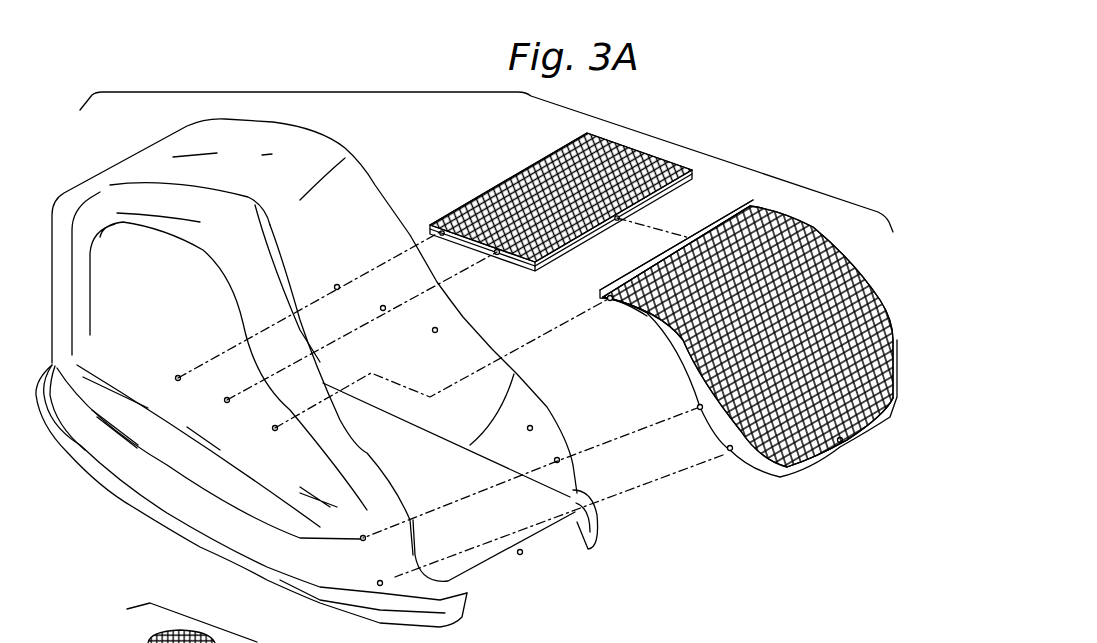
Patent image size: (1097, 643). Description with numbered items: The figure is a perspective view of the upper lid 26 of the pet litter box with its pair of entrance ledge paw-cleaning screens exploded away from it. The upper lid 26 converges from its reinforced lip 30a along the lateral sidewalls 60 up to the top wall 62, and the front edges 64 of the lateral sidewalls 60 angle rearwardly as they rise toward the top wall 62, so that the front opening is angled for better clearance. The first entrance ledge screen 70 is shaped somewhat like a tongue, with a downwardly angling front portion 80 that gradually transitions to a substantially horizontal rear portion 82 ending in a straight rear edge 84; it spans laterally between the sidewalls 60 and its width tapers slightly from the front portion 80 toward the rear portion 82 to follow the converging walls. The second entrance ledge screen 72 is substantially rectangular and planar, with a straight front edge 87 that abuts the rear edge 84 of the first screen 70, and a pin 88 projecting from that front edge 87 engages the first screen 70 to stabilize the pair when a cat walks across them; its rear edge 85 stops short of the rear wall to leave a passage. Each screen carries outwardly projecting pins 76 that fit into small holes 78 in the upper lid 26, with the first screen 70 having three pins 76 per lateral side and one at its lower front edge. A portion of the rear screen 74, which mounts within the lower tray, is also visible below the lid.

The upper lid 26 is at (98, 172).
The top wall 62 is at (258, 172).
The lateral sidewalls 60 is at (167, 316).
The reinforced lip 30a is at (88, 493).
The holes 78 is at (360, 539).
The rear screen 74 is at (120, 637).
The second entrance ledge screen 72 is at (532, 158).
The rear edge 85 is at (480, 197).
The front edge 87 is at (638, 207).
The pins 76 is at (606, 299).
The front edges 64 is at (370, 456).
The first entrance ledge screen 70 is at (824, 478).
The rear portion 82 is at (778, 212).
The rear edge 84 is at (724, 214).
The front portion 80 is at (863, 428).
The pin 88 is at (610, 294).